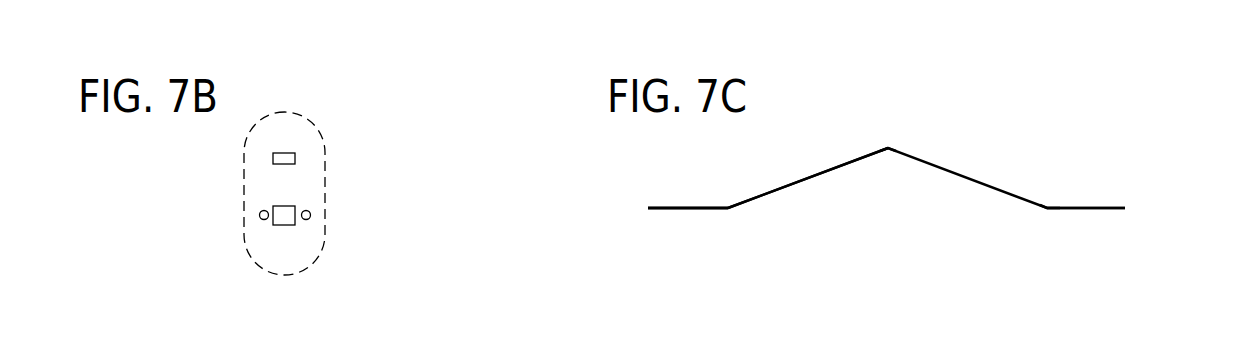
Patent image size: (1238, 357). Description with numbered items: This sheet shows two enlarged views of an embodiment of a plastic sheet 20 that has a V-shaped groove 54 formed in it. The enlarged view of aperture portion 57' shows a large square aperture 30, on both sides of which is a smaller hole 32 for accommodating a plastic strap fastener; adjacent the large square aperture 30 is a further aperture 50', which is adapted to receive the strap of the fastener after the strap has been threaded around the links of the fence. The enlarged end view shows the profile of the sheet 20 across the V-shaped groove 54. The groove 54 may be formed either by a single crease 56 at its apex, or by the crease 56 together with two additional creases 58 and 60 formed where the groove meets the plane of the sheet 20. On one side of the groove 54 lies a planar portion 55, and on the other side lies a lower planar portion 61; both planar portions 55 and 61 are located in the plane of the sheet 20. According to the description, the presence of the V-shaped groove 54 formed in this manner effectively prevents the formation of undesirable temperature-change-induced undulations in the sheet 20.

In FIG. 7B, the aperture 50' is at (299, 107).
In FIG. 7B, the aperture portion 57' is at (323, 163).
In FIG. 7B, the large square aperture 30 is at (290, 206).
In FIG. 7B, the smaller hole 32 is at (259, 214).
In FIG. 7C, the V-shaped groove 54 is at (952, 142).
In FIG. 7C, the planar portion 55 is at (673, 208).
In FIG. 7C, the additional crease 58 is at (727, 208).
In FIG. 7C, the crease 56 is at (888, 148).
In FIG. 7C, the additional crease 60 is at (1048, 208).
In FIG. 7C, the lower planar portion 61 is at (1108, 208).
In FIG. 7C, the plastic sheet 20 is at (703, 210).